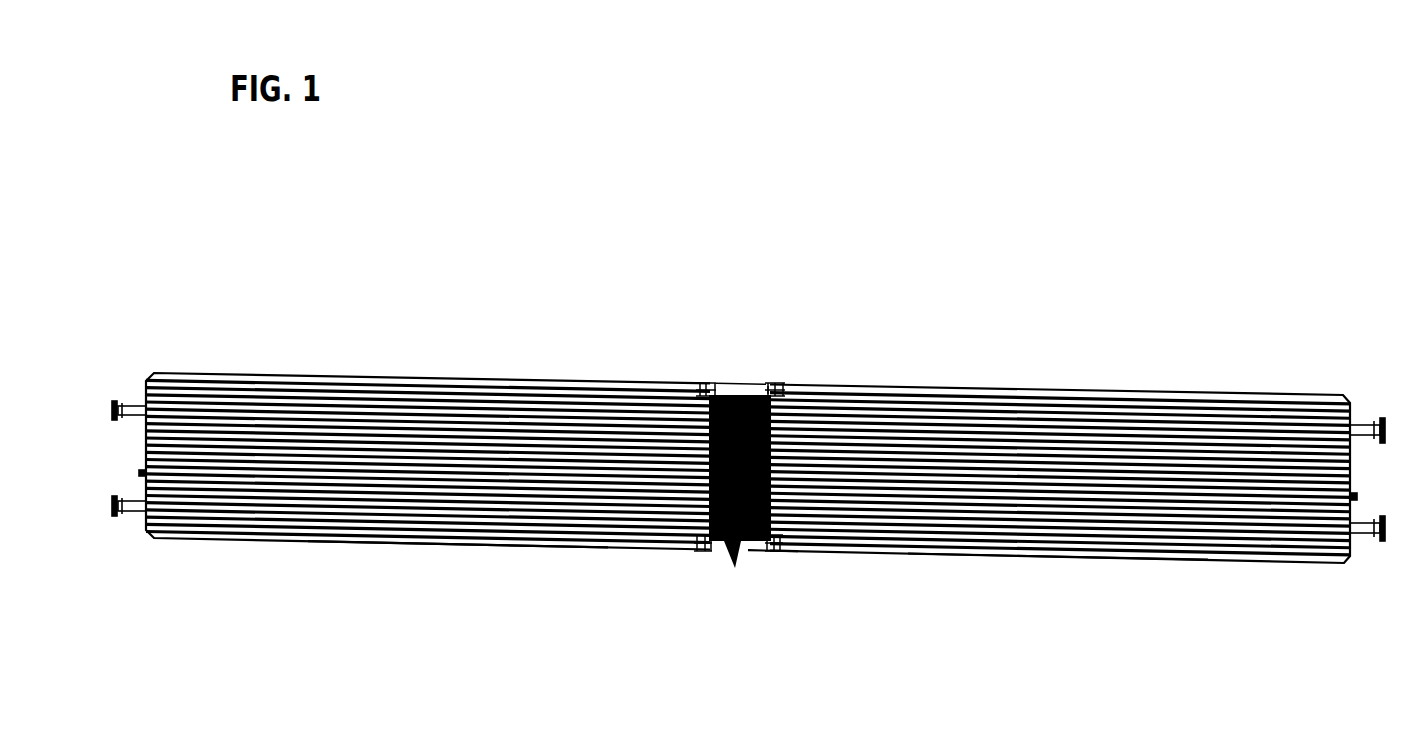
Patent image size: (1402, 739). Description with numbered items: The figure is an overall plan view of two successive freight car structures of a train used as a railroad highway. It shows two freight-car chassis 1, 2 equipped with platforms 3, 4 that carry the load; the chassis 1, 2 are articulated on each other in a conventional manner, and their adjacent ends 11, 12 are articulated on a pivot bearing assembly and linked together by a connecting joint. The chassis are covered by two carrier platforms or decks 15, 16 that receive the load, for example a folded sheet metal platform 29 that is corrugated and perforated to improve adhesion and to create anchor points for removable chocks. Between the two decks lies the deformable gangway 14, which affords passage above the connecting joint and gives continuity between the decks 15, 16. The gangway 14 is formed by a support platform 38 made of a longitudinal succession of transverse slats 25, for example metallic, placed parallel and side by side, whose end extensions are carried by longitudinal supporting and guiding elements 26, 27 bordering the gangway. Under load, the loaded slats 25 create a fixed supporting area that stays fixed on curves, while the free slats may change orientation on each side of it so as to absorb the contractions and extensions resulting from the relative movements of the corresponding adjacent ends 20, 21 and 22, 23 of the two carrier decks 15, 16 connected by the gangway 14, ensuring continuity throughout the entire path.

The freight-car chassis 1 is at (510, 338).
The freight-car chassis 2 is at (1063, 360).
The platform 3 is at (470, 540).
The platform 4 is at (1030, 547).
The end of freight-car chassis 11 is at (683, 425).
The end of freight-car chassis 12 is at (777, 463).
The deformable gangway 14 is at (747, 340).
The carrier deck 15 is at (1160, 437).
The carrier deck 16 is at (383, 420).
The end of carrier deck 20 is at (692, 543).
The end of carrier deck 21 is at (767, 543).
The end of carrier deck 22 is at (698, 387).
The end of carrier deck 23 is at (767, 387).
The slat 25 is at (727, 543).
The longitudinal supporting and guiding element 26 is at (760, 568).
The longitudinal supporting and guiding element 27 is at (775, 327).
The folded sheet metal platform 29 is at (1322, 413).
The support platform 38 is at (727, 395).